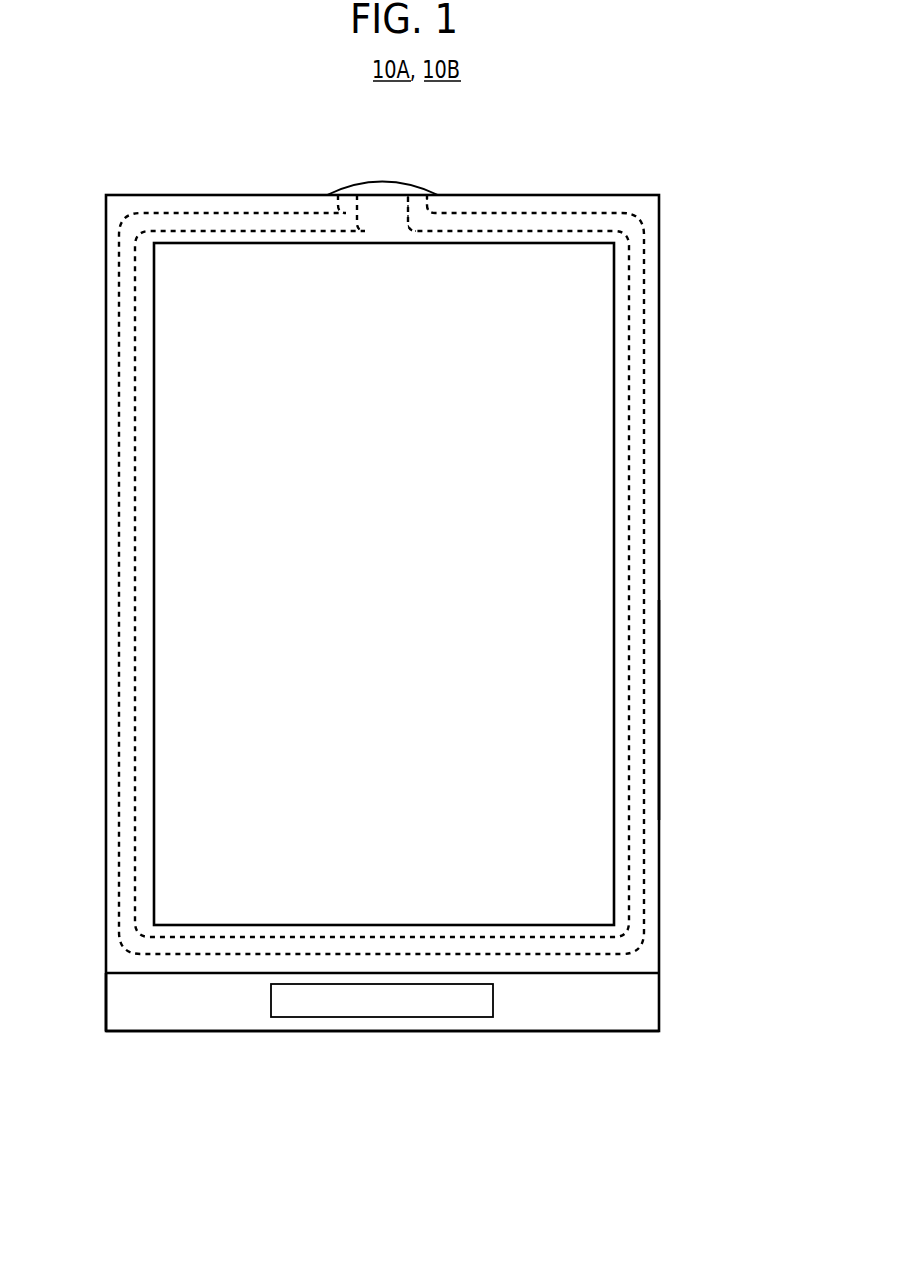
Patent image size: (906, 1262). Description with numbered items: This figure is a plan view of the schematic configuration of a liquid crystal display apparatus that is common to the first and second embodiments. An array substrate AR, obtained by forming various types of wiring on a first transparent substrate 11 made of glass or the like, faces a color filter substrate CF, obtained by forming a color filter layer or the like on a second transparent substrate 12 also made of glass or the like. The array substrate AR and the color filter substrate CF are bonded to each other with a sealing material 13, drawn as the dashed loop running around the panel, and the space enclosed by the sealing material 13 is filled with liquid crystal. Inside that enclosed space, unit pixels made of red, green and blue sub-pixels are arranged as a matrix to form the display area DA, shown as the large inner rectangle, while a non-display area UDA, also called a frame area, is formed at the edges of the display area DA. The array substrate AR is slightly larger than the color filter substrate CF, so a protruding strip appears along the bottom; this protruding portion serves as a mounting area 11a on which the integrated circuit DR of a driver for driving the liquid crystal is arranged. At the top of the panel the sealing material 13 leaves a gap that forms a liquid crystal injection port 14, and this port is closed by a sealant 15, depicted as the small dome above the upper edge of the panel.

The first transparent substrate 11 is at (660, 1000).
The mounting area 11a is at (632, 1022).
The second transparent substrate 12 is at (660, 563).
The sealing material 13 is at (638, 338).
The liquid crystal injection port 14 is at (372, 223).
The sealant 15 is at (398, 190).
The display area DA is at (587, 452).
The non-display area UDA is at (647, 838).
The color filter substrate CF is at (661, 710).
The integrated circuit DR is at (365, 1003).
The array substrate AR is at (105, 1008).